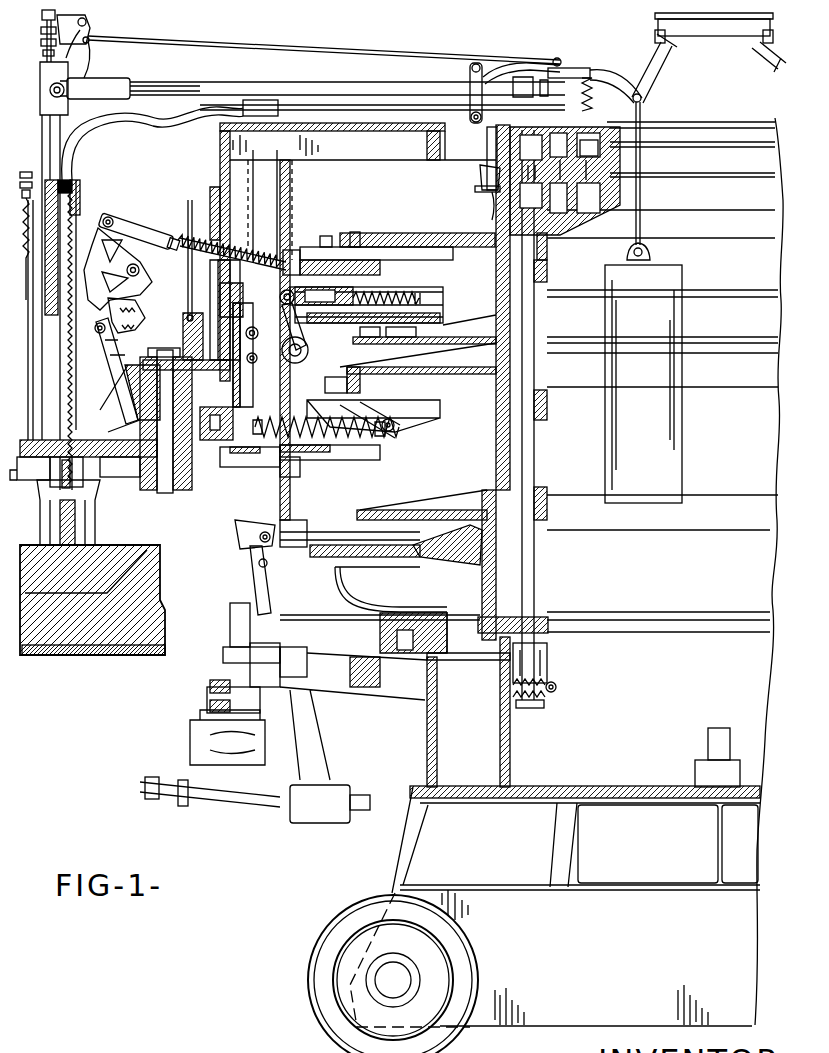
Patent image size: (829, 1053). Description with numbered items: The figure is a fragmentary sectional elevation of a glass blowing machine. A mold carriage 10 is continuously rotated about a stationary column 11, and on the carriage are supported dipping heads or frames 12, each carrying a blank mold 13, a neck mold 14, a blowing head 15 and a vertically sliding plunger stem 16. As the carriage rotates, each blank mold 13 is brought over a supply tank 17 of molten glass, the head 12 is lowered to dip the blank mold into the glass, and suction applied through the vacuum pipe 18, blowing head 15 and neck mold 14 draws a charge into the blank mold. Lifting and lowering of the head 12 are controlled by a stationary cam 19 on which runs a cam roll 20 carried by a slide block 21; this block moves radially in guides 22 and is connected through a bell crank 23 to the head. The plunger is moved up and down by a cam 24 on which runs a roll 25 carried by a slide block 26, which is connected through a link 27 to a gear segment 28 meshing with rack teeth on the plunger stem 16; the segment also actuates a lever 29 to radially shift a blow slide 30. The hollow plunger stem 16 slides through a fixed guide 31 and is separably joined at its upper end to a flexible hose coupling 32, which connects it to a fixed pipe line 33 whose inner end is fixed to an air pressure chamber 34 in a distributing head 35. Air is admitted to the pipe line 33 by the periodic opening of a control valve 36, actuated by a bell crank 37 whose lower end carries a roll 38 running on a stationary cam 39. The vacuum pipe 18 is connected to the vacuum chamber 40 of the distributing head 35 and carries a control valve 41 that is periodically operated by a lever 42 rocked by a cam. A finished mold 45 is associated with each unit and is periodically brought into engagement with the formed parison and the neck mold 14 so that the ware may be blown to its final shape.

The mold carriage 10 is at (290, 496).
The stationary column 11 is at (493, 462).
The dipping head 12 is at (170, 295).
The blank mold 13 is at (94, 523).
The neck mold 14 is at (36, 480).
The blowing head 15 is at (36, 432).
The plunger stem 16 is at (70, 396).
The supply tank 17 is at (158, 580).
The vacuum pipe 18 is at (50, 135).
The stationary cam 19 is at (387, 327).
The cam roll 20 is at (367, 333).
The slide block 21 is at (330, 327).
The guides 22 is at (307, 357).
The bell crank 23 is at (289, 389).
The cam 24 is at (352, 247).
The roll 25 is at (325, 247).
The slide block 26 is at (320, 255).
The link 27 is at (140, 230).
The gear segment 28 is at (143, 322).
The lever 29 is at (108, 358).
The blow slide 30 is at (112, 412).
The fixed guide 31 is at (80, 205).
The flexible hose coupling 32 is at (80, 143).
The fixed pipe line 33 is at (318, 118).
The air pressure chamber 34 is at (610, 152).
The distributing head 35 is at (660, 130).
The control valve 36 is at (574, 146).
The bell crank 37 is at (575, 72).
The roll 38 is at (478, 192).
The stationary cam 39 is at (493, 193).
The vacuum chamber 40 is at (520, 143).
The control valve 41 is at (43, 52).
The lever 42 is at (458, 52).
The finished mold 45 is at (190, 716).